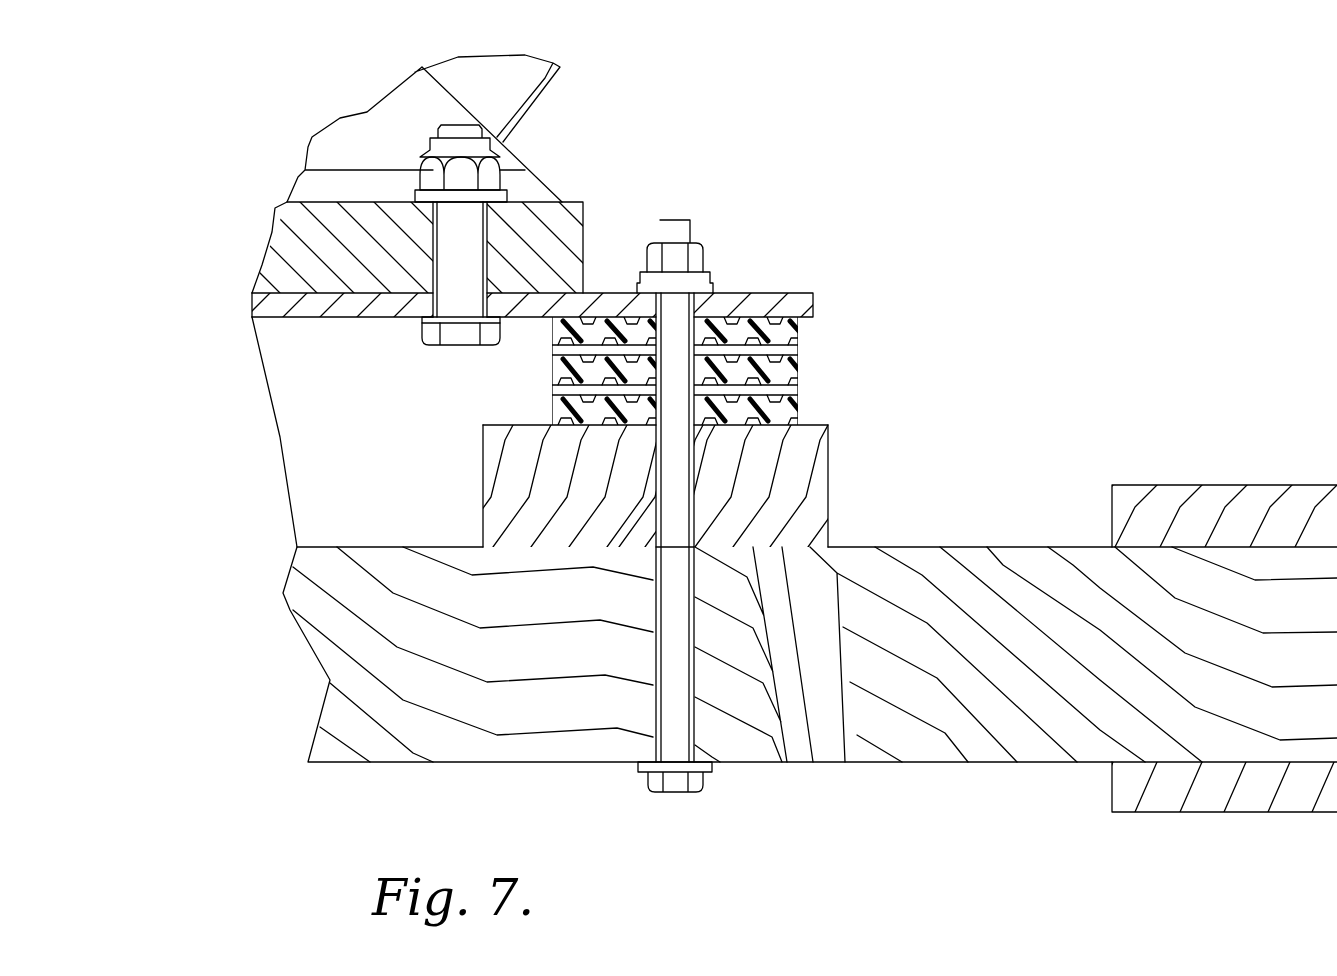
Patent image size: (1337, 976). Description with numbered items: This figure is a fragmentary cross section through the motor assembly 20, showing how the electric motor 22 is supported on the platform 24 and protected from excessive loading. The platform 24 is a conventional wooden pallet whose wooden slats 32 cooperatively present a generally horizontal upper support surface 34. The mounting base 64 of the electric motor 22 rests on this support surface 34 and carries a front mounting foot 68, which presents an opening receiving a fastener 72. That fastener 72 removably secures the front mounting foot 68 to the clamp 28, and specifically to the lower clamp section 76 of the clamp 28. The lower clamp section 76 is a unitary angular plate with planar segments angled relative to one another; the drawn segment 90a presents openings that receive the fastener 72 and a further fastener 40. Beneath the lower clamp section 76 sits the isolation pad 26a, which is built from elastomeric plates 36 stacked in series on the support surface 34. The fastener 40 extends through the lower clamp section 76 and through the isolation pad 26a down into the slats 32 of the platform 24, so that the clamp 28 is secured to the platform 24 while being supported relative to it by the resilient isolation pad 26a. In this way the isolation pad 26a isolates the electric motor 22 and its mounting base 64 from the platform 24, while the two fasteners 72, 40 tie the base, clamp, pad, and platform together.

The motor assembly 20 is at (1032, 189).
The electric motor 22 is at (545, 78).
The platform 24 is at (974, 735).
The isolation pad 26a is at (793, 373).
The clamp 28 is at (790, 302).
The wooden slats 32 is at (808, 493).
The upper support surface 34 is at (815, 425).
The elastomeric plates 36 is at (795, 333).
The fastener 40 is at (678, 720).
The mounting base 64 is at (573, 203).
The front mounting feet 68 is at (573, 233).
The fastener 72 is at (437, 330).
The lower clamp section 76 is at (270, 317).
The planar segment 90a is at (335, 310).